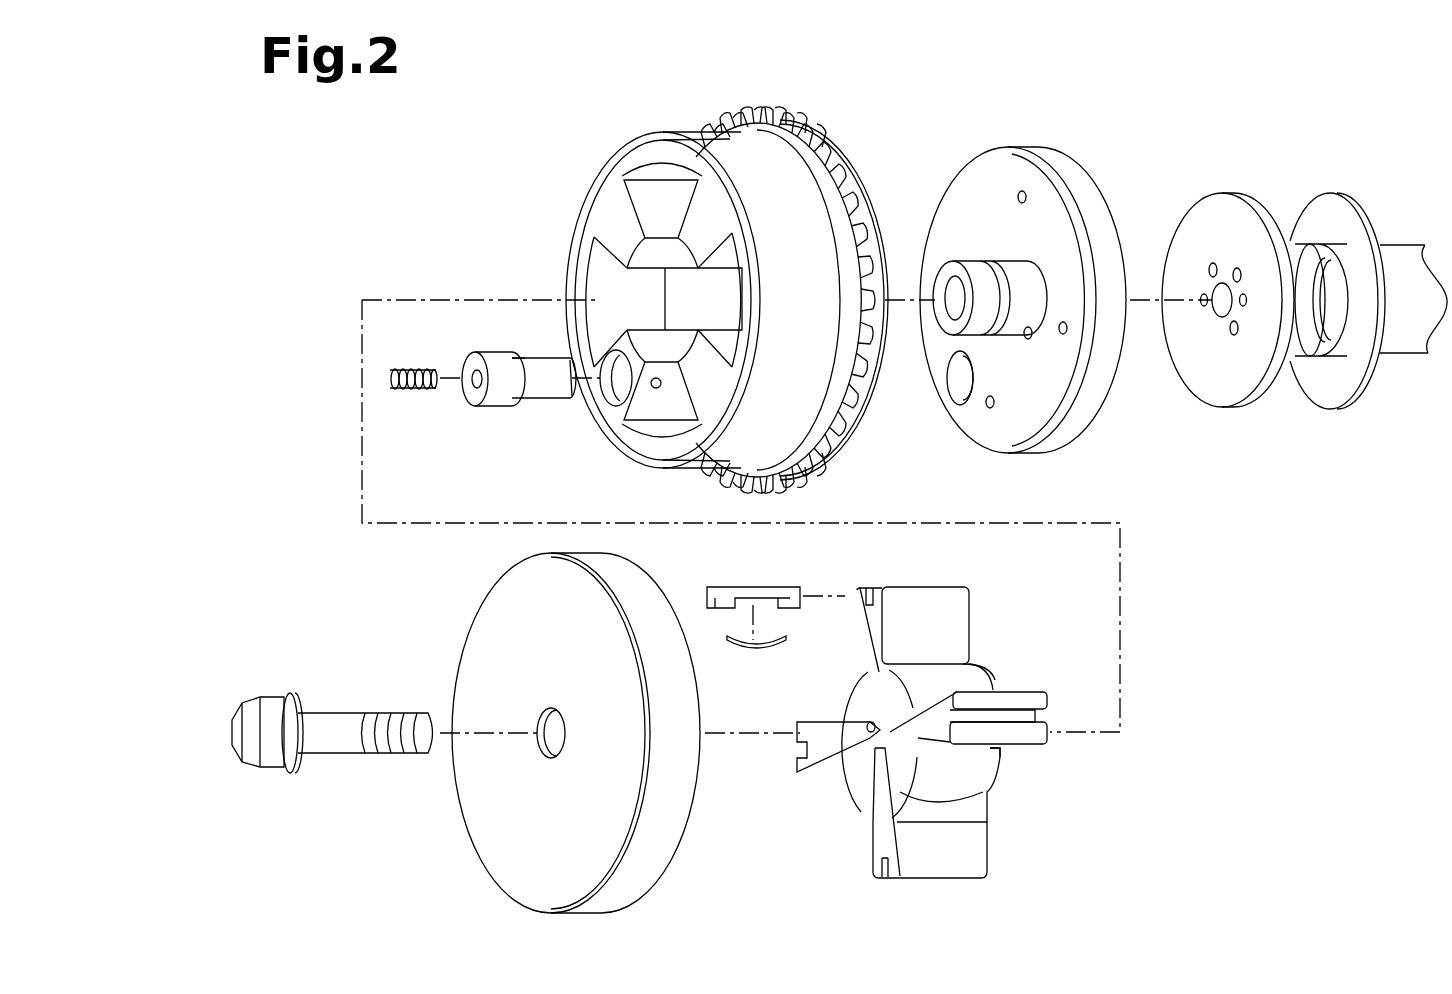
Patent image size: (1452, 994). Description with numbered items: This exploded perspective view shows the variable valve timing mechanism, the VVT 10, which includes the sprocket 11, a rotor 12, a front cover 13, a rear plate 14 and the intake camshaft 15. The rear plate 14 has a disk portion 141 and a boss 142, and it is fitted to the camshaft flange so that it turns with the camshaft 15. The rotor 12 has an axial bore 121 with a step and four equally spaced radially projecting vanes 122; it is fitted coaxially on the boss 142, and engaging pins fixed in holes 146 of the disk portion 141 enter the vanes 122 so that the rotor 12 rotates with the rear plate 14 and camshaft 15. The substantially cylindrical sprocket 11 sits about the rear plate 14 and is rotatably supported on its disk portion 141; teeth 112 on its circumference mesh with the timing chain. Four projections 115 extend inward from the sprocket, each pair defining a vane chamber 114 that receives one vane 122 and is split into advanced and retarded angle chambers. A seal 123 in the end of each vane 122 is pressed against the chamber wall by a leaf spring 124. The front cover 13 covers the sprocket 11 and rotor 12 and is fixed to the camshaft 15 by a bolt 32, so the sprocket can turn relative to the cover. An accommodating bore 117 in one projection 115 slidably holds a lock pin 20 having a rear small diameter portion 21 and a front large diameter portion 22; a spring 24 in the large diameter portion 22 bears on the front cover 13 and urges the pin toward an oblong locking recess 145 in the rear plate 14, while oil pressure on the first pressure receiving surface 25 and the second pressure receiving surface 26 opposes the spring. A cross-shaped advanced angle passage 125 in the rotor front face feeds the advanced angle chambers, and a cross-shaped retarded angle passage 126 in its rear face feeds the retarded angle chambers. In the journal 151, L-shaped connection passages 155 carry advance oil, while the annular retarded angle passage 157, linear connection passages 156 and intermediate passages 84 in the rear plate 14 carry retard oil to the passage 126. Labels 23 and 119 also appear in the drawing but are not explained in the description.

The VVT 10 is at (868, 126).
The sprocket 11 is at (594, 150).
The rotor 12 is at (828, 860).
The front cover 13 is at (441, 855).
The rear plate 14 is at (938, 454).
The intake camshaft 15 is at (1296, 445).
The lock pin 20 is at (483, 448).
The small diameter portion 21 is at (535, 400).
The large diameter portion 22 is at (498, 355).
The pin bore 23 is at (470, 388).
The spring 24 is at (410, 390).
The first pressure receiving surface 25 is at (512, 357).
The second pressure receiving surface 26 is at (568, 398).
The bolt 32 is at (288, 770).
The intermediate passages 84 is at (1025, 339).
The teeth 112 is at (757, 486).
The vane chamber 114 is at (581, 293).
The projections 115 is at (583, 226).
The accommodating bore 117 is at (624, 392).
The fluid passage hole 119 is at (656, 378).
The axial bore 121 is at (860, 722).
The vanes 122 is at (962, 623).
The seal 123 is at (757, 583).
The leaf spring 124 is at (745, 648).
The advanced angle passage 125 is at (855, 782).
The retarded angle passage 126 is at (978, 670).
The disk portion 141 is at (1036, 288).
The boss 142 is at (978, 262).
The locking recess 145 is at (962, 375).
The holes 146 is at (1026, 201).
The journal 151 is at (1325, 412).
The L-shaped connection passages 155 is at (1213, 263).
The linear connection passages 156 is at (1202, 300).
The annular retarded angle passage 157 is at (1310, 266).